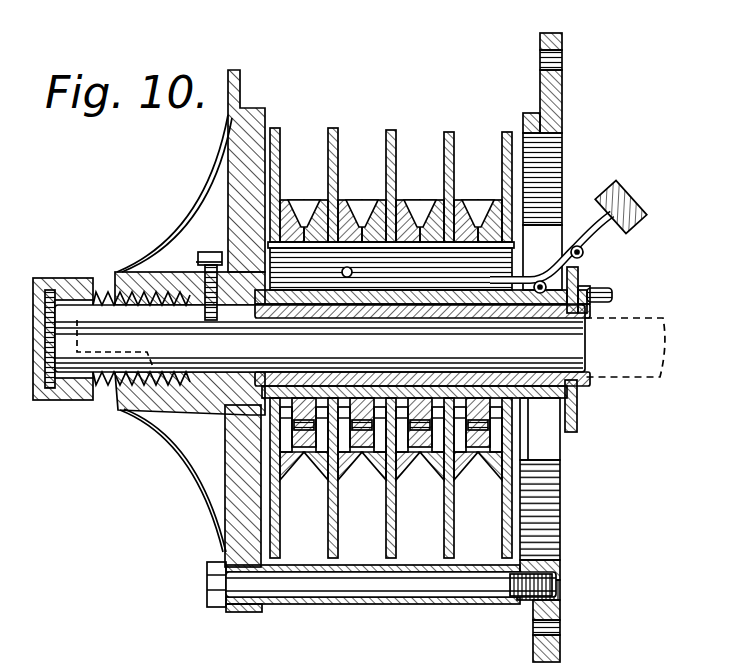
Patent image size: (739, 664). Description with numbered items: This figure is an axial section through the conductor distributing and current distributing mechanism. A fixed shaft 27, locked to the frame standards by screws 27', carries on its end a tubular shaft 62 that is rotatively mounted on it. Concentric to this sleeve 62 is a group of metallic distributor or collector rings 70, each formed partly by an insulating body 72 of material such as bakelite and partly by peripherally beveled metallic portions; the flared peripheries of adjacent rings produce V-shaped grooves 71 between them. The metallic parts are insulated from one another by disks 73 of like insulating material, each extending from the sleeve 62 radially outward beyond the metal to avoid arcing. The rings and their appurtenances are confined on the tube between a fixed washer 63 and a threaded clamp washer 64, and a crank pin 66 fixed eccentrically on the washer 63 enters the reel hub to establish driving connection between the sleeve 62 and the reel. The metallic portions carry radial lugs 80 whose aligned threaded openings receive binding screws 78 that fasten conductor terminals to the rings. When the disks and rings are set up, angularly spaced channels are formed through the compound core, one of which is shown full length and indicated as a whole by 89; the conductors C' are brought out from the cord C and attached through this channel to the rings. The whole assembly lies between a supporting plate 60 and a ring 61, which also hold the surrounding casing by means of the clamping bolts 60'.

The supporting plate 60 is at (191, 318).
The clamping bolts 60' is at (381, 598).
The ring 61 is at (560, 570).
The tubular shaft 62 is at (548, 352).
The fixed washer 63 is at (562, 405).
The threaded clamp washer 64 is at (215, 420).
The crank pin 66 is at (612, 294).
The distributor or collector rings 70 is at (304, 222).
The V-shaped grooves 71 is at (301, 476).
The body 72 is at (417, 395).
The disks 73 is at (392, 130).
The binding screws 78 is at (290, 425).
The lugs 80 is at (376, 458).
The channel 89 is at (207, 250).
The fixed shaft 27 is at (636, 330).
The screws 27' is at (170, 227).
The cord C is at (636, 197).
The conductors C' is at (568, 253).